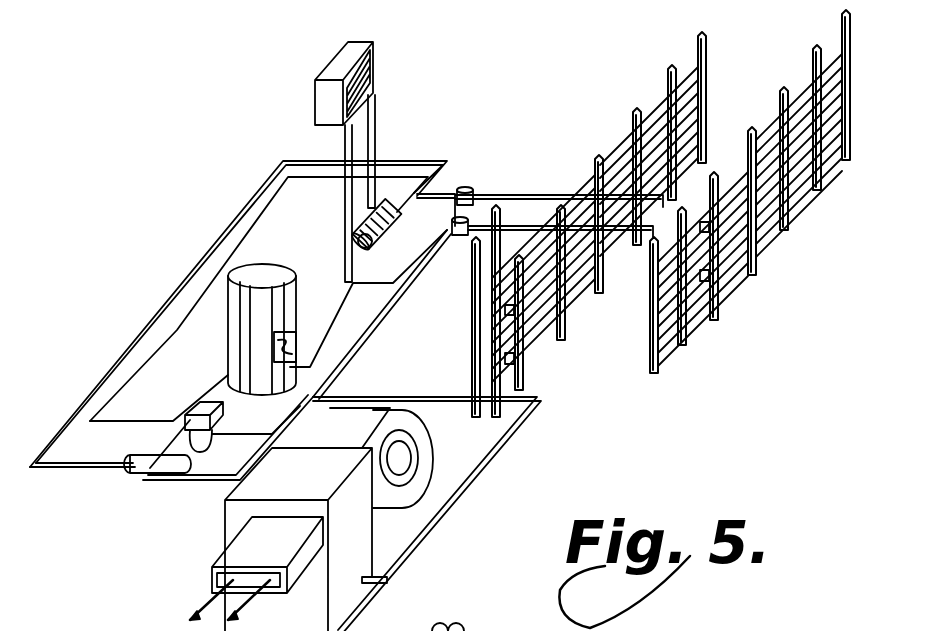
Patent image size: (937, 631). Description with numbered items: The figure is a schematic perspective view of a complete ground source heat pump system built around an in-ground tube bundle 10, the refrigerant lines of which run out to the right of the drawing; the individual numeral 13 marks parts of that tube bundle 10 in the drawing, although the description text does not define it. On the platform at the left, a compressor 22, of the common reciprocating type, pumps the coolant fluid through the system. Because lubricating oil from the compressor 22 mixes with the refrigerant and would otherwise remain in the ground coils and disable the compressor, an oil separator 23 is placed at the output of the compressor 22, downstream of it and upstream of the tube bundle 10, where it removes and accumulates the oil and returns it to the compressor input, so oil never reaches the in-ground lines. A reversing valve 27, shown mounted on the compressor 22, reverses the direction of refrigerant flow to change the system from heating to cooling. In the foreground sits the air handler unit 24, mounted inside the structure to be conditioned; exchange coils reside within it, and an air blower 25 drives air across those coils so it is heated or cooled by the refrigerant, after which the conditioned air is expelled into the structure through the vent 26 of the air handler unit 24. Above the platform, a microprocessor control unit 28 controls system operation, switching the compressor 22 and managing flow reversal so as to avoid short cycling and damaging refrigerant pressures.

The tube bundle 10 is at (620, 118).
The vertical rod 13 is at (712, 40).
The compressor 22 is at (263, 272).
The oil separator 23 is at (200, 410).
The air handler unit 24 is at (364, 537).
The air blower 25 is at (414, 434).
The vent 26 is at (240, 545).
The reversing valve 27 is at (275, 338).
The microprocessor control unit 28 is at (345, 42).